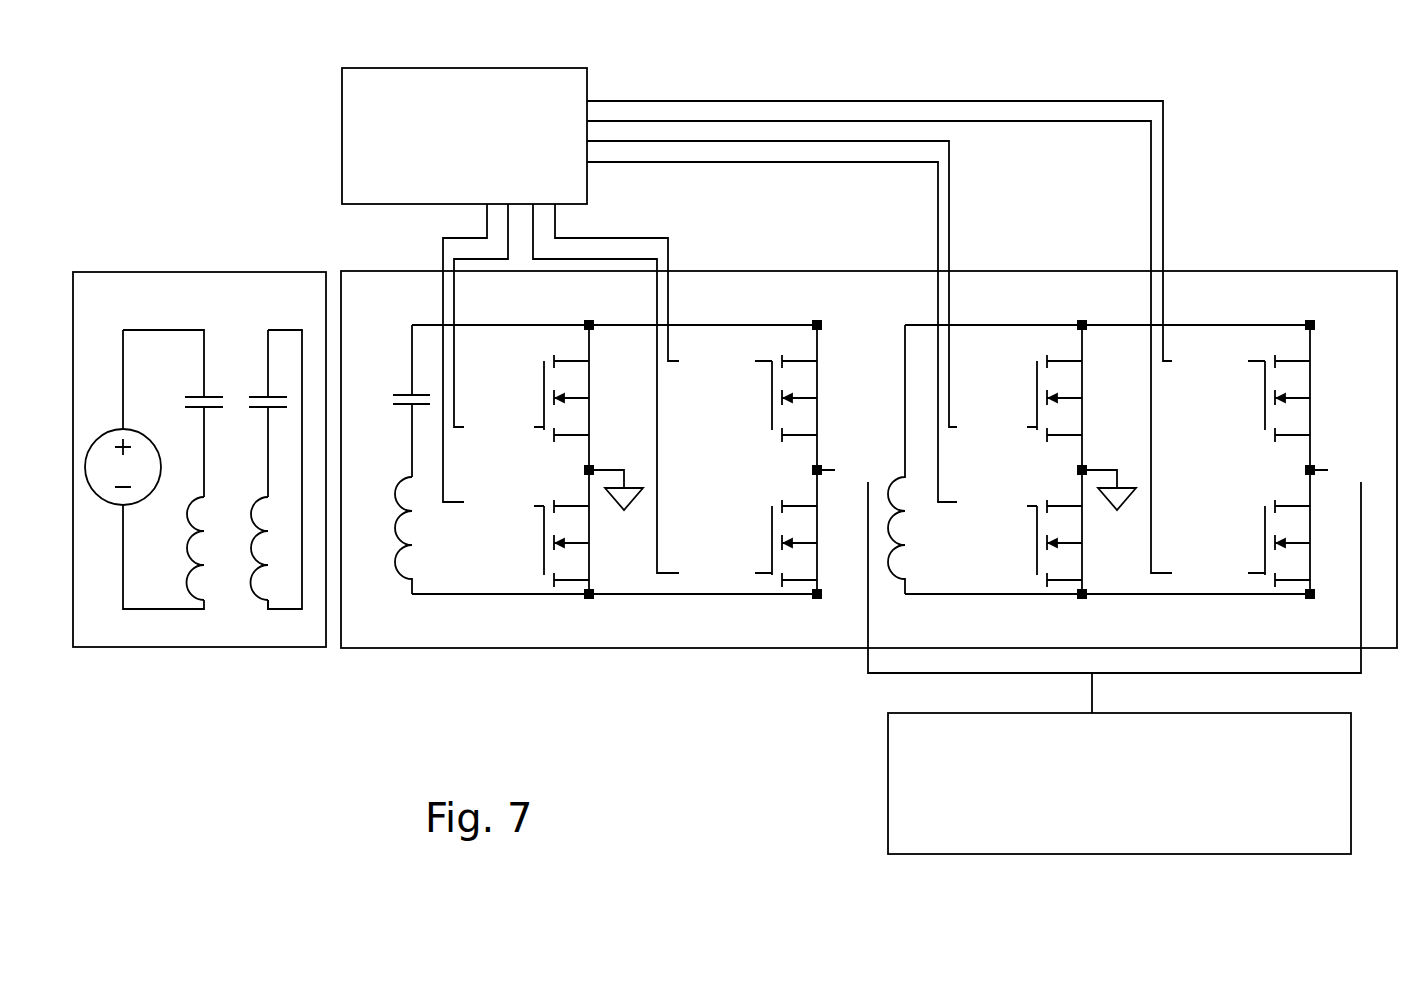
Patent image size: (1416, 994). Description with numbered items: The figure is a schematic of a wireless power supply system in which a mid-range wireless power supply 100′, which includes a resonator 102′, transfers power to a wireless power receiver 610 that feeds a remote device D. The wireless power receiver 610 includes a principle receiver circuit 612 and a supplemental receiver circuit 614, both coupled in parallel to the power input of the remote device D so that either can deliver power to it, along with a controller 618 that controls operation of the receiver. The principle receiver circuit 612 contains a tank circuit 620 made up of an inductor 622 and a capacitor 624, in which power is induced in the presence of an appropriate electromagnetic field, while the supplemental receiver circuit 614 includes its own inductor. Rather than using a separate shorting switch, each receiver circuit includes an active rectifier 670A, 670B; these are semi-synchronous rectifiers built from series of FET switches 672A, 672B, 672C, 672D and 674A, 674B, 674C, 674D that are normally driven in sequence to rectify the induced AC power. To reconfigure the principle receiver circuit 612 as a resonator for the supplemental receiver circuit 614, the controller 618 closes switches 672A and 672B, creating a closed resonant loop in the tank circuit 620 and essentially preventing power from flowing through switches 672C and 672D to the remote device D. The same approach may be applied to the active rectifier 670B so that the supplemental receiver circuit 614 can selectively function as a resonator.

The mid-range wireless power supply 100′ is at (193, 271).
The resonator 102′ is at (294, 612).
The controller 618 is at (342, 131).
The wireless power receiver 610 is at (683, 716).
The principle receiver circuit 612 is at (615, 464).
The supplemental receiver circuit 614 is at (1100, 459).
The tank circuit 620 is at (389, 509).
The capacitor 624 is at (393, 398).
The inductor 622 is at (398, 578).
The active rectifier 670A is at (647, 423).
The active rectifier 670B is at (1144, 423).
The rectifier switch 672A is at (540, 378).
The rectifier switch 672B is at (540, 556).
The rectifier switch 672C is at (818, 352).
The rectifier switch 672D is at (825, 570).
The rectifier switch 674A is at (1060, 340).
The rectifier switch 674B is at (1035, 556).
The rectifier switch 674C is at (1318, 372).
The rectifier switch 674D is at (1316, 568).
The remote device D is at (888, 781).